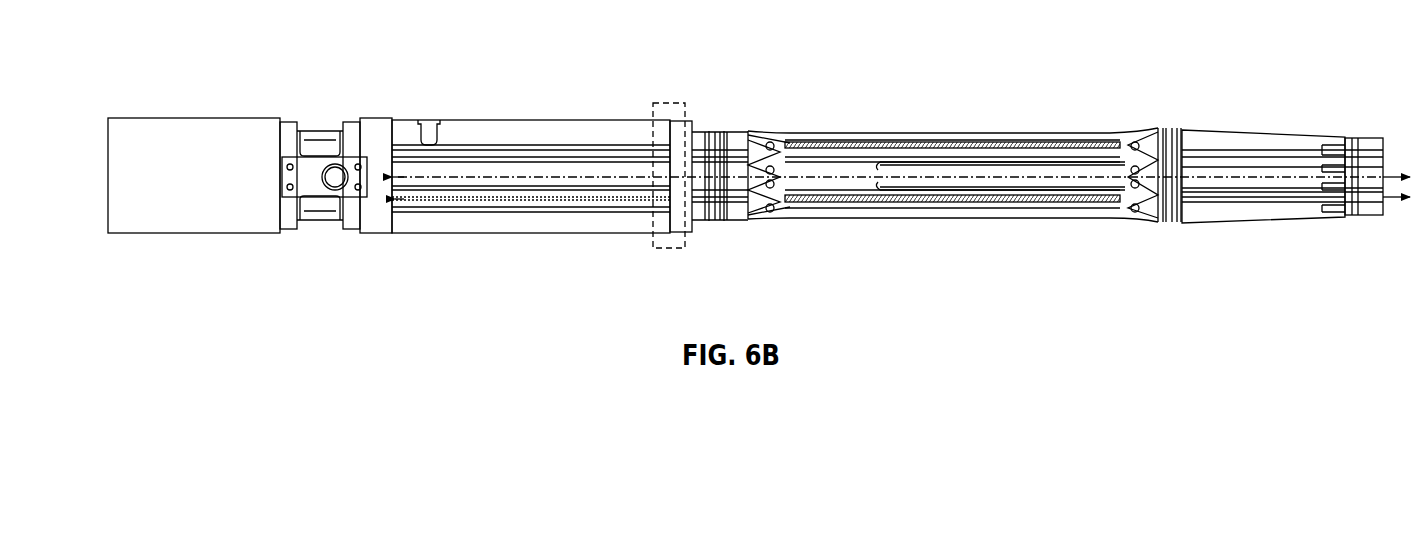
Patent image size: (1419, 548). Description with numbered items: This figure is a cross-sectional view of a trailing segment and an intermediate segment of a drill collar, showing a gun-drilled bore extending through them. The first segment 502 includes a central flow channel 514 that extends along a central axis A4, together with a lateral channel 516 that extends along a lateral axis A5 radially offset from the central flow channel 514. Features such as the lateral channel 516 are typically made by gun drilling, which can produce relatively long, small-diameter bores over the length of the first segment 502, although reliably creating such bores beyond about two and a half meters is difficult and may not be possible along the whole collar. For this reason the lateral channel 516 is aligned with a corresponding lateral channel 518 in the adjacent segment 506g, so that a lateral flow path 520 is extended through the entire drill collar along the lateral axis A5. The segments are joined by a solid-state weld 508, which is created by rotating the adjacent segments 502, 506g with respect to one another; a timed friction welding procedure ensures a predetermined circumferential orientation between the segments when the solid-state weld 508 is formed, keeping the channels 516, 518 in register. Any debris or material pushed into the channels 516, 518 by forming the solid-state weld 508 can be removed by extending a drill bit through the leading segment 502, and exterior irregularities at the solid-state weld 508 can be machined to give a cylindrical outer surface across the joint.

The first segment 502 is at (1262, 130).
The adjacent segment 506g is at (470, 119).
The solid-state weld 508 is at (673, 102).
The central flow channel 514 is at (1235, 170).
The lateral channel 516 is at (1010, 198).
The lateral channel 518 is at (545, 200).
The lateral flow path 520 is at (383, 202).
The central axis A4 is at (850, 175).
The lateral axis A5 is at (927, 198).